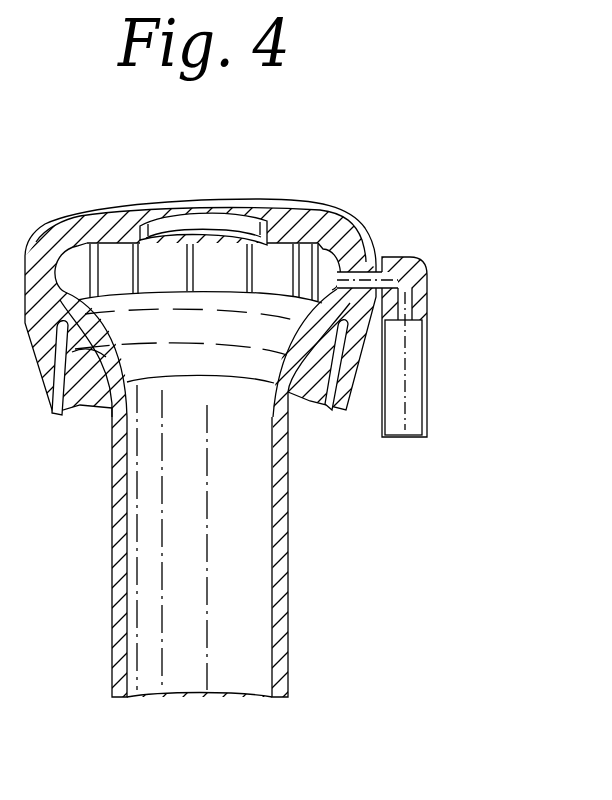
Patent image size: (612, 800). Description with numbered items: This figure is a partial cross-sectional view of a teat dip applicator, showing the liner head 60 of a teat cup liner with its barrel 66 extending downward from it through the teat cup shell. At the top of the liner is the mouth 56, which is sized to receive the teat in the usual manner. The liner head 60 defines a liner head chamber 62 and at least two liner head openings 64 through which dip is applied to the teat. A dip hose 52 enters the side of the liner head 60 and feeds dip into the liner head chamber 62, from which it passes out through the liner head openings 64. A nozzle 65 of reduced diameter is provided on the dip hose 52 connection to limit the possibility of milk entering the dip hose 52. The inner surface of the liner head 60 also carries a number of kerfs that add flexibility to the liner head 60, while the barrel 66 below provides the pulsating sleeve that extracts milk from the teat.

The dip hose 52 is at (380, 436).
The mouth 56 is at (247, 222).
The liner head 60 is at (337, 215).
The liner head chamber 62 is at (330, 288).
The liner head opening 64 is at (208, 207).
The nozzle 65 is at (392, 257).
The barrel 66 is at (282, 596).